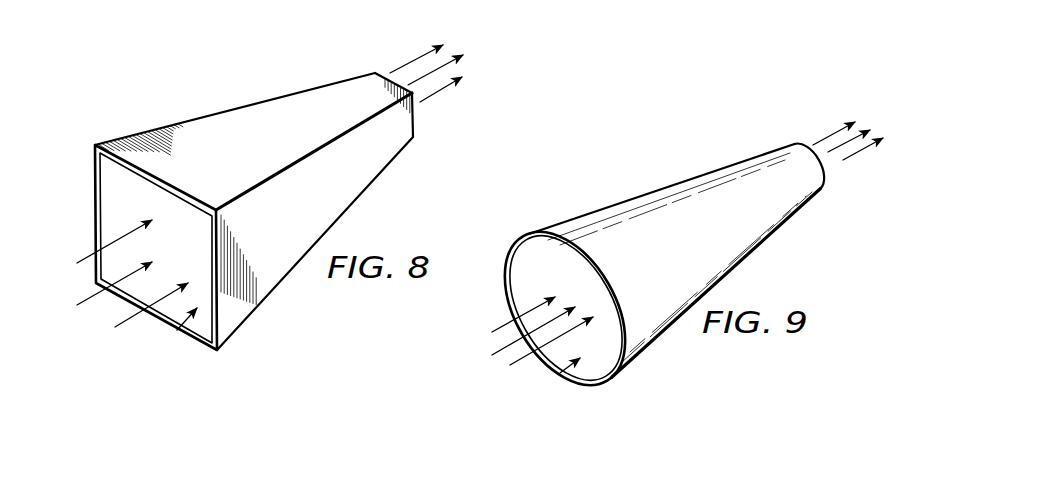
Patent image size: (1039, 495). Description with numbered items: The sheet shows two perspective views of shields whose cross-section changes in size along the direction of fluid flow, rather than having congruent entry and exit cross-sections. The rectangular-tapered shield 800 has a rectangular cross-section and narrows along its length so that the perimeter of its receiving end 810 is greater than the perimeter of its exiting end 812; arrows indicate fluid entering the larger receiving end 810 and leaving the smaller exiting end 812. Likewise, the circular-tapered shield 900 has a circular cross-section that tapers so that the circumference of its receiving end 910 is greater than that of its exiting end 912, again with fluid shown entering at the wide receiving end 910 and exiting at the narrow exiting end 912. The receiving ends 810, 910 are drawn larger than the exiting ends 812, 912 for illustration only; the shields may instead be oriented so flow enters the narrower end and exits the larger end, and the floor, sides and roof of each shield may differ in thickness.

In FIG. 8, the rectangular-tapered shield 800 is at (187, 105).
In FIG. 8, the receiving end 810 is at (183, 328).
In FIG. 8, the exiting end 812 is at (430, 119).
In FIG. 9, the circular-tapered shield 900 is at (631, 173).
In FIG. 9, the receiving end 910 is at (567, 377).
In FIG. 9, the exiting end 912 is at (810, 131).